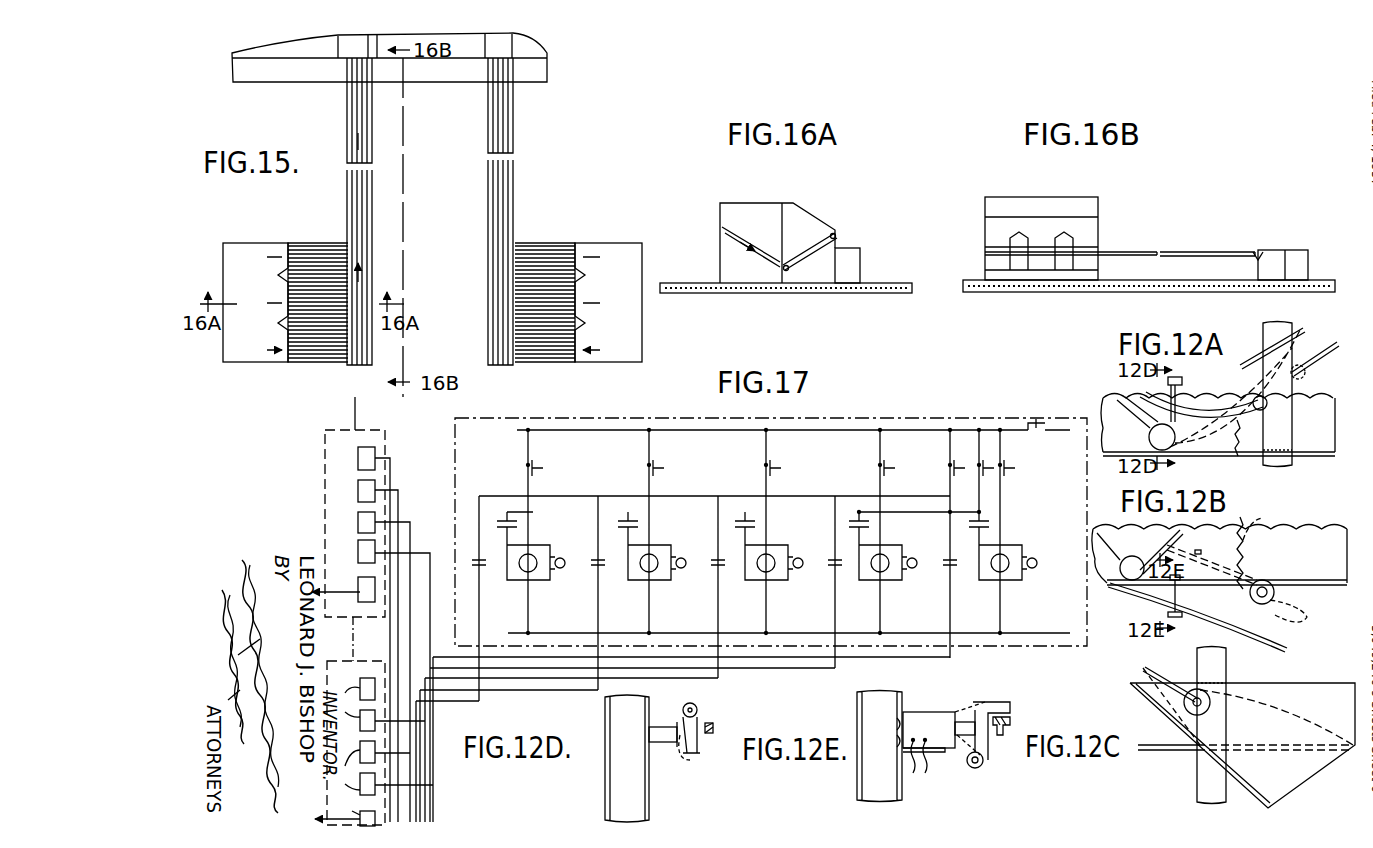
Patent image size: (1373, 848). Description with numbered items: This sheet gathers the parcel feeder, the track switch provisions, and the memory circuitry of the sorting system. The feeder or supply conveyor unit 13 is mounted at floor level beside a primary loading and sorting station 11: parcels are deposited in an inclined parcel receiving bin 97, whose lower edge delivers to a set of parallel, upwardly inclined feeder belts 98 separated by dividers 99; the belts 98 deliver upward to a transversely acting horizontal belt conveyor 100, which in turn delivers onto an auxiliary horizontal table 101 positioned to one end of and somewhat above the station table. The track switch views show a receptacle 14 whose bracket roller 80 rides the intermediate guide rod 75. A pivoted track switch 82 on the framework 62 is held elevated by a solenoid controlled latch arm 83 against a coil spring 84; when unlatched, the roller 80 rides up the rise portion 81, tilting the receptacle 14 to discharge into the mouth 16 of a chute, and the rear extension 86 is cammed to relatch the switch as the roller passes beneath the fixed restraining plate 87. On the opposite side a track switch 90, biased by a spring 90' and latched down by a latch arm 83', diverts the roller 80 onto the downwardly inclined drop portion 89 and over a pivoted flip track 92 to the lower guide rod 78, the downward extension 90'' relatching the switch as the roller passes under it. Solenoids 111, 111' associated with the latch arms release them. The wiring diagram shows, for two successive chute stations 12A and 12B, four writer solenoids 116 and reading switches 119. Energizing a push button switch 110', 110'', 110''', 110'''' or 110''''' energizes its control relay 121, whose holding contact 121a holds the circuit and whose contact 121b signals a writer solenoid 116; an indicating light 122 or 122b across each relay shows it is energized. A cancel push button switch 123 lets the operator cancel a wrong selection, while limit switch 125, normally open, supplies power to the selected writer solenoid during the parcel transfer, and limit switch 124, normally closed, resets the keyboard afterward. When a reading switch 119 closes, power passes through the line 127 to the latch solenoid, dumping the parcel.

In FIG. 15, the loading and sorting station 11 is at (453, 58).
In FIG. 16B, the loading and sorting station 11 is at (1273, 243).
In FIG. 15, the feeder or supply conveyor unit 13 is at (530, 210).
In FIG. 16A, the feeder or supply conveyor unit 13 is at (885, 198).
In FIG. 16B, the feeder or supply conveyor unit 13 is at (1110, 190).
In FIG. 12A, the receptacle 14 is at (1327, 435).
In FIG. 12B, the receptacle 14 is at (1305, 540).
In FIG. 12C, the mouth 16 is at (1277, 685).
In FIG. 12A, the framework 62 is at (1272, 330).
In FIG. 12C, the framework 62 is at (1225, 672).
In FIG. 12D, the framework 62 is at (622, 773).
In FIG. 12E, the framework 62 is at (868, 725).
In FIG. 12A, the intermediate guide rod 75 is at (1310, 457).
In FIG. 12B, the intermediate guide rod 75 is at (1115, 587).
In FIG. 12C, the lower guide rod 78 is at (1180, 752).
In FIG. 12A, the roller 80 is at (1150, 438).
In FIG. 12B, the roller 80 is at (1133, 560).
In FIG. 12A, the rise portion 81 is at (1330, 352).
In FIG. 12A, the track switch 82 is at (1227, 410).
In FIG. 12D, the track switch 82 is at (713, 725).
In FIG. 12A, the latch arm 83 is at (1189, 391).
In FIG. 12D, the latch arm 83 is at (696, 741).
In FIG. 12B, the latch arm 83' is at (1157, 596).
In FIG. 12E, the latch arm 83' is at (987, 721).
In FIG. 12A, the coil spring 84 is at (1240, 450).
In FIG. 12A, the rear extension 86 is at (1308, 378).
In FIG. 12A, the restraining plate 87 is at (1303, 333).
In FIG. 12B, the drop portion 89 is at (1227, 623).
In FIG. 12C, the drop portion 89 is at (1180, 670).
In FIG. 12B, the track switch 90 is at (1220, 569).
In FIG. 12E, the track switch 90 is at (1025, 718).
In FIG. 12B, the spring 90' is at (1263, 519).
In FIG. 12B, the downward extension 90'' is at (1304, 618).
In FIG. 12C, the flip track 92 is at (1257, 715).
In FIG. 15, the parcel receiving bin 97 is at (252, 352).
In FIG. 16A, the parcel receiving bin 97 is at (725, 227).
In FIG. 16B, the parcel receiving bin 97 is at (993, 227).
In FIG. 15, the feeder belts 98 is at (325, 358).
In FIG. 16A, the feeder belts 98 is at (802, 248).
In FIG. 15, the dividers 99 is at (305, 273).
In FIG. 16A, the dividers 99 is at (825, 237).
In FIG. 16B, the dividers 99 is at (1067, 243).
In FIG. 15, the horizontal belt conveyor 100 is at (508, 197).
In FIG. 16A, the horizontal belt conveyor 100 is at (860, 250).
In FIG. 16B, the horizontal belt conveyor 100 is at (992, 257).
In FIG. 15, the auxiliary horizontal table 101 is at (347, 50).
In FIG. 17, the push button switch 110' is at (1053, 495).
In FIG. 17, the push button switch 110'' is at (919, 484).
In FIG. 17, the push button switch 110''' is at (778, 544).
In FIG. 17, the push button switch 110'''' is at (701, 455).
In FIG. 17, the push button switch 110''''' is at (585, 455).
In FIG. 12D, the solenoid 111 is at (673, 712).
In FIG. 12E, the solenoid 111' is at (939, 727).
In FIG. 15, the writer solenoid 116 is at (358, 492).
In FIG. 15, the reading switch 119 is at (358, 597).
In FIG. 17, the control relay 121 is at (520, 570).
In FIG. 17, the holding contact 121a is at (493, 523).
In FIG. 17, the contact 121b is at (485, 568).
In FIG. 17, the indicating light 122 is at (563, 570).
In FIG. 17, the indicating light 122b is at (907, 570).
In FIG. 17, the cancel push button switch 123 is at (1037, 432).
In FIG. 17, the limit switch 124 is at (979, 470).
In FIG. 17, the limit switch 125 is at (947, 462).
In FIG. 15, the line 127 is at (340, 590).
In FIG. 15, the chute station 12A is at (325, 441).
In FIG. 15, the chute station 12B is at (327, 677).